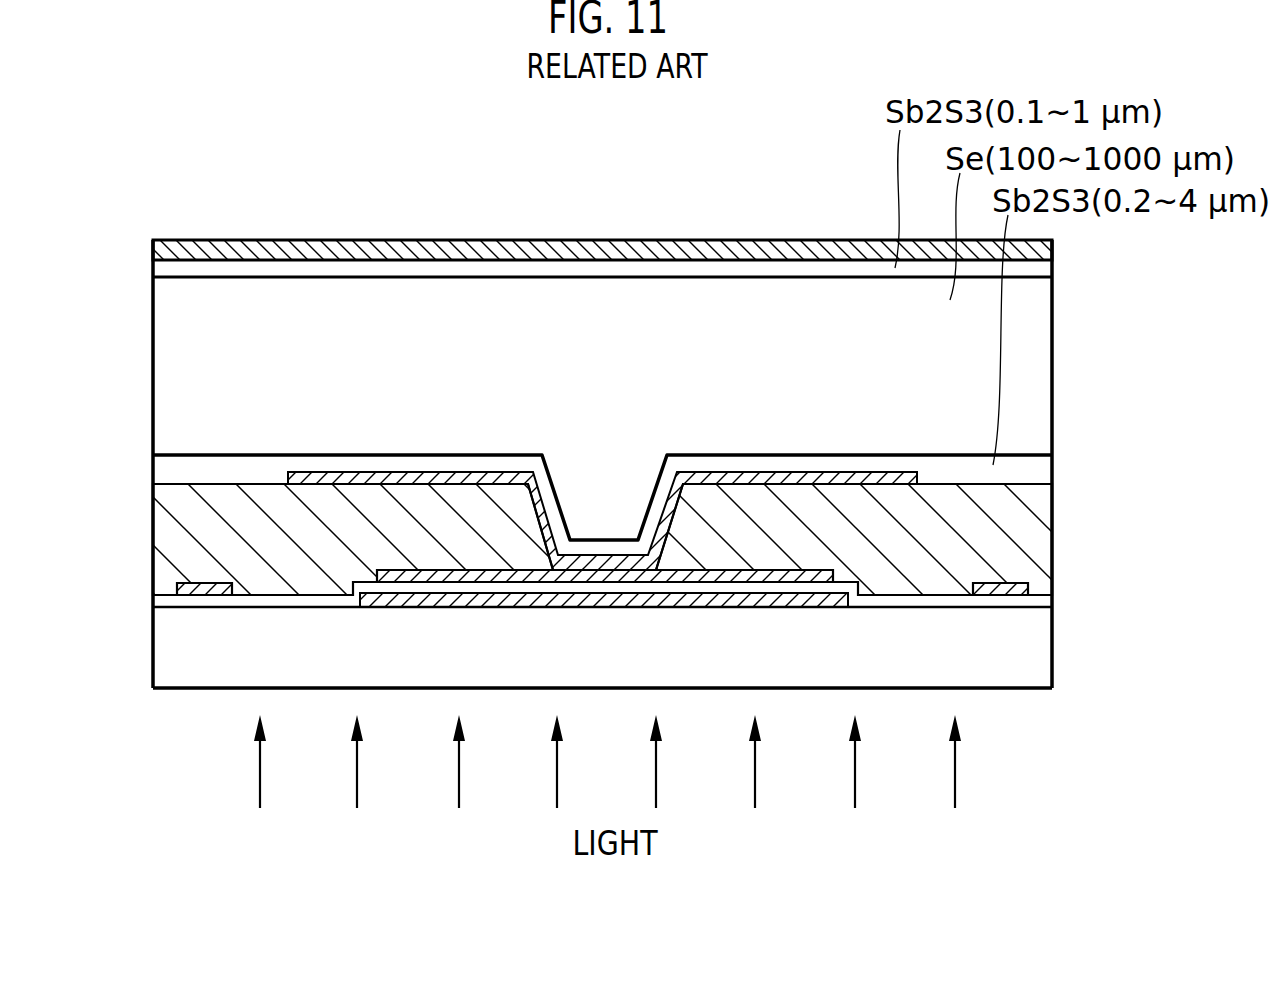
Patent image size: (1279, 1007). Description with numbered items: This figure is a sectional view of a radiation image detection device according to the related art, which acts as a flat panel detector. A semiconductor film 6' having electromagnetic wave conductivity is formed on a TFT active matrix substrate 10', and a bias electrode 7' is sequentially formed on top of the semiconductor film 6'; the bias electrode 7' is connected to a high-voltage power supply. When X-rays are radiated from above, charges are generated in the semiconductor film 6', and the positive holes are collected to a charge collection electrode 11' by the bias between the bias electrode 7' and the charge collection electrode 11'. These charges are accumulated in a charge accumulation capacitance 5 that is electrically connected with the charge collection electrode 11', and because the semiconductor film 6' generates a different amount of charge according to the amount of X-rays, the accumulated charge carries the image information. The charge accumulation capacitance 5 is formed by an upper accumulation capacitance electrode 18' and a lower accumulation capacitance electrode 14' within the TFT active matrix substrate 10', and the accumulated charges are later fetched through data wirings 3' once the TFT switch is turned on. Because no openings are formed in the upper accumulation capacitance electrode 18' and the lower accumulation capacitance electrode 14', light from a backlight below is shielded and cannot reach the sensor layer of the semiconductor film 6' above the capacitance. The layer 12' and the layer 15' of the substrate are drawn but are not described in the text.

The bias electrode 7' is at (602, 204).
The semiconductor film 6' is at (633, 517).
The charge collection electrode 11' is at (602, 614).
The passivation layer 12' is at (556, 539).
The upper accumulation capacitance electrode 18' is at (605, 663).
The lower accumulation capacitance electrode 14' is at (604, 675).
The gate insulating layer 15' is at (602, 678).
The data wiring 3' is at (606, 670).
The charge accumulation capacitance 5 is at (609, 629).
The TFT active matrix substrate 10' is at (596, 620).